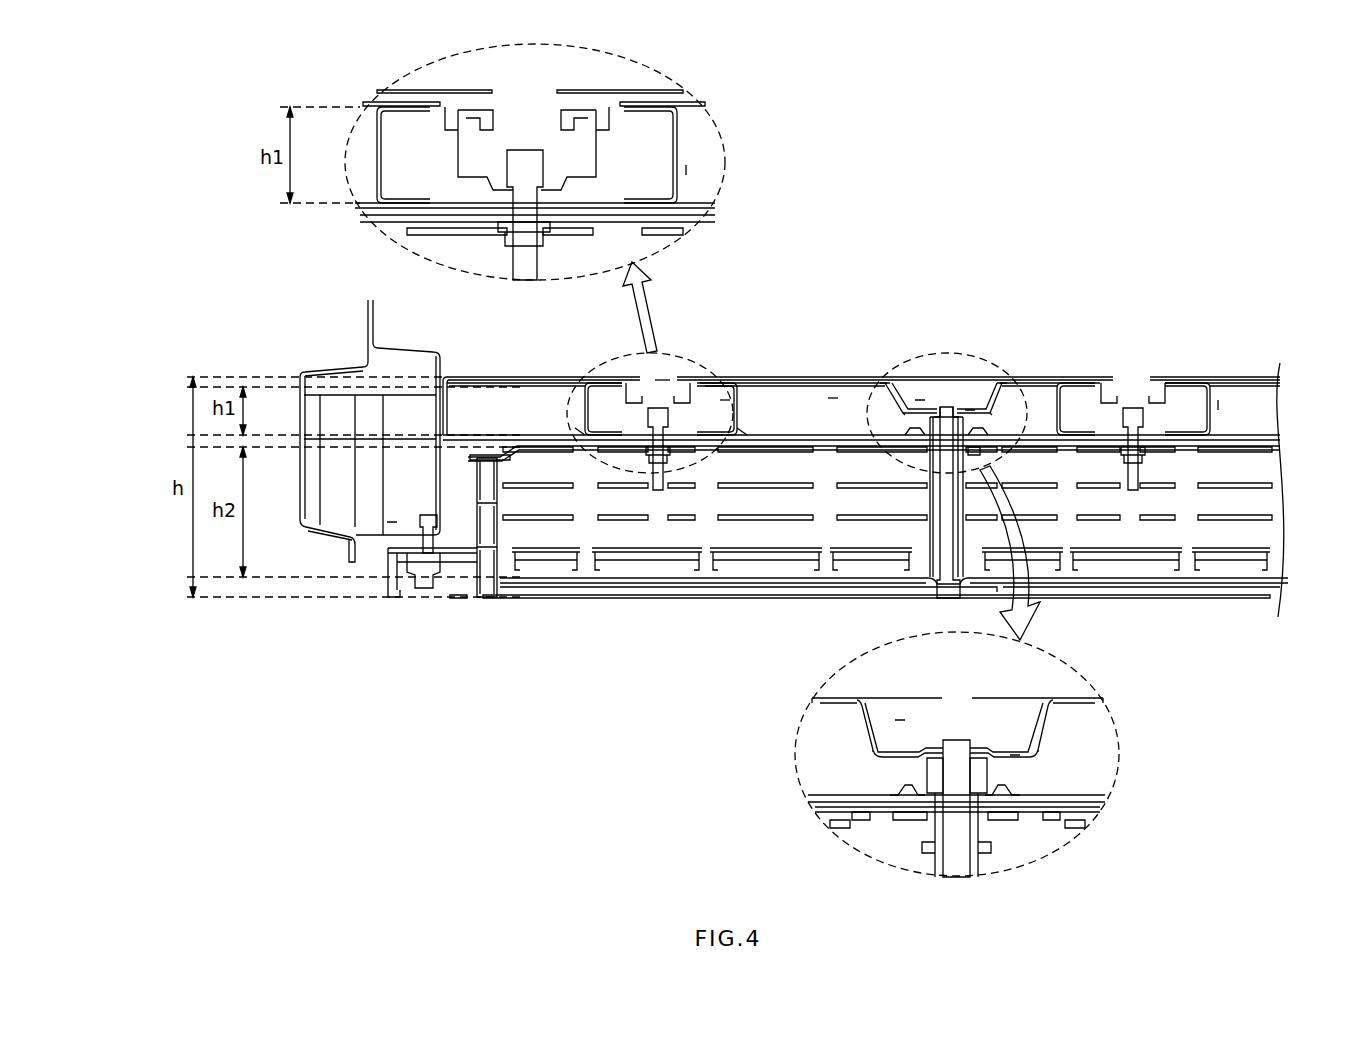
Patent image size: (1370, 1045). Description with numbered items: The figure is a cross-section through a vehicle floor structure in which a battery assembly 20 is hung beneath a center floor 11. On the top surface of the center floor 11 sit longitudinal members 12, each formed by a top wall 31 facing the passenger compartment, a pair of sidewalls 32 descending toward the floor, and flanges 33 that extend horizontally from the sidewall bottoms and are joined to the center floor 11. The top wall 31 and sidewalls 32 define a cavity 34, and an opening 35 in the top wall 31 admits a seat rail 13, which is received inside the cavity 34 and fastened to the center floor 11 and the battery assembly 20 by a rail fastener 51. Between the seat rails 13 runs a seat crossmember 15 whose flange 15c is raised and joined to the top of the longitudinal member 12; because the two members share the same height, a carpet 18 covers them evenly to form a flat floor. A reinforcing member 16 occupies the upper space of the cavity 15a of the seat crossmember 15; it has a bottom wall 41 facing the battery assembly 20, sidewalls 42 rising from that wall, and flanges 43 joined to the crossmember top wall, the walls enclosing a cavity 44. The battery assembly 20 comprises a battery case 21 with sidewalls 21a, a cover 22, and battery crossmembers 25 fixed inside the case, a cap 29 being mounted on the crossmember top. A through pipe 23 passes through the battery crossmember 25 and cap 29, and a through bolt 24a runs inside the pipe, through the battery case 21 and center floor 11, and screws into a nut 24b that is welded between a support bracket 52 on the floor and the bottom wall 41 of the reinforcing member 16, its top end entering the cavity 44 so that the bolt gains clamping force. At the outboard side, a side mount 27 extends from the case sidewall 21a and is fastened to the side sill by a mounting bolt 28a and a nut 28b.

The center floor 11 is at (650, 205).
The longitudinal member 12 is at (684, 170).
The seat rail 13 is at (458, 170).
The seat crossmember 15 is at (690, 102).
The cavity of the seat crossmember 15a is at (833, 410).
The flange 15c is at (430, 90).
The reinforcing member 16 is at (1000, 405).
The carpet 18 is at (465, 377).
The battery assembly 20 is at (617, 640).
The battery case 21 is at (557, 600).
The sidewall of the battery case 21a is at (480, 590).
The cover 22 is at (690, 218).
The through pipe 23 is at (932, 530).
The through bolt 24a is at (946, 500).
The nut 24b is at (937, 425).
The battery crossmember 25 is at (1270, 448).
The side mount 27 is at (390, 582).
The mounting bolt 28a is at (425, 588).
The nut 28b is at (424, 517).
The cap 29 is at (975, 455).
The top wall 31 is at (425, 108).
The sidewall 32 is at (378, 155).
The flange 33 is at (572, 427).
The cavity 34 is at (725, 400).
The opening 35 is at (662, 380).
The bottom wall 41 is at (970, 410).
The sidewall 42 is at (905, 405).
The flange 43 is at (885, 383).
The cavity 44 is at (925, 400).
The rail fastener 51 is at (527, 150).
The support bracket 52 is at (975, 430).